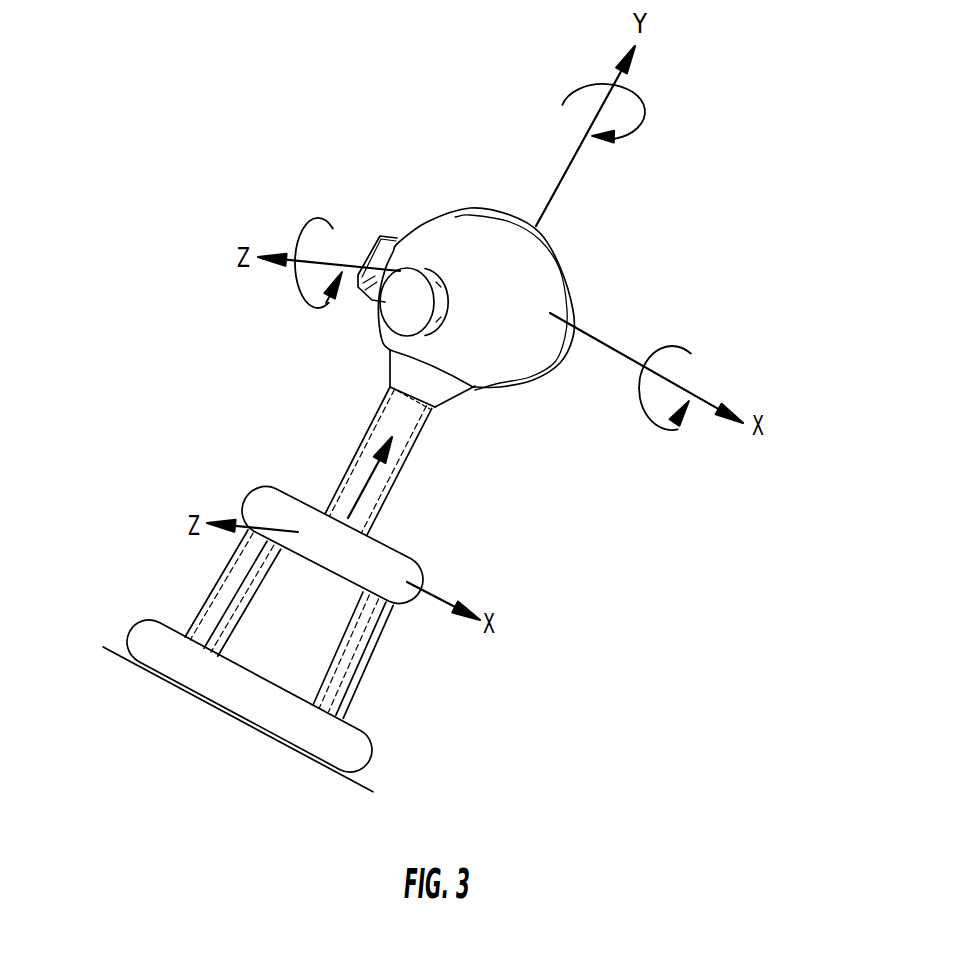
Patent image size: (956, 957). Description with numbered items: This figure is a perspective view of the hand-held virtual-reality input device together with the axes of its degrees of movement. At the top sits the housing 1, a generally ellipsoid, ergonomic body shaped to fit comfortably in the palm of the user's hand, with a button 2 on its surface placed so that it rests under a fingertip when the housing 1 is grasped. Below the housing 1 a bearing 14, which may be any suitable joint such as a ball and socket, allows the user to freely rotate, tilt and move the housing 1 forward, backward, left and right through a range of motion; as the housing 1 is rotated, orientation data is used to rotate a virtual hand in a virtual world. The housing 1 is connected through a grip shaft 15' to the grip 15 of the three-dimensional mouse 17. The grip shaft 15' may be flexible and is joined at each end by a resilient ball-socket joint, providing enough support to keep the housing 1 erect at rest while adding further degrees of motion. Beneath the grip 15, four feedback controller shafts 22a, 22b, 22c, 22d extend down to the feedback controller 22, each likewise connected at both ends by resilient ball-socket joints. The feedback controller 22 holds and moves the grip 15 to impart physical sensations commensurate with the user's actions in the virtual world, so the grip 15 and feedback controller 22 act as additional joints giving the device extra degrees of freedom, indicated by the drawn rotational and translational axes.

The housing 1 is at (508, 275).
The button 2 is at (443, 290).
The bearing 14 is at (447, 387).
The grip 15 is at (352, 545).
The grip shaft 15' is at (363, 461).
The 3-D mouse 17 is at (160, 632).
The feedback controller 22 is at (353, 760).
The feedback controller shaft 22a is at (225, 623).
The feedback controller shaft 22b is at (256, 595).
The feedback controller shaft 22c is at (360, 678).
The feedback controller shaft 22d is at (377, 652).